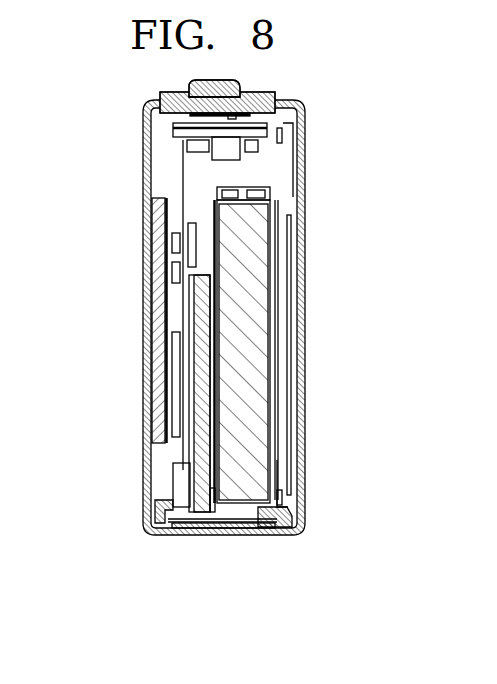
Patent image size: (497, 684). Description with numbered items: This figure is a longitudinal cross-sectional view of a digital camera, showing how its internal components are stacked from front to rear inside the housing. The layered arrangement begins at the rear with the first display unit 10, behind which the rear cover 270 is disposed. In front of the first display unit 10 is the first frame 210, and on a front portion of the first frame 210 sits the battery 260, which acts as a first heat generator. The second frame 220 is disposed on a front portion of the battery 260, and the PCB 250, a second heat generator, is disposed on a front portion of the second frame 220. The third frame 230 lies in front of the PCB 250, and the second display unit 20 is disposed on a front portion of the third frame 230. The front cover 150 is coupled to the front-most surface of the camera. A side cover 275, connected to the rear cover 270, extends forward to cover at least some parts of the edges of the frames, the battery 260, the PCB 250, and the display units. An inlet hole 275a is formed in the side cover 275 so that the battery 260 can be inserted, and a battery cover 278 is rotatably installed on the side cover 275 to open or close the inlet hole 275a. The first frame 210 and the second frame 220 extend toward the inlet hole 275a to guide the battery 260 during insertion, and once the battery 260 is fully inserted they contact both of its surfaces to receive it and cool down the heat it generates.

The first display unit 10 is at (304, 221).
The second display unit 20 is at (150, 274).
The front cover 150 is at (150, 480).
The first frame 210 is at (300, 270).
The second frame 220 is at (216, 514).
The third frame 230 is at (158, 333).
The PCB 250 is at (197, 482).
The battery 260 is at (258, 460).
The rear cover 270 is at (302, 496).
The side cover 275 is at (291, 534).
The inlet hole 275a is at (258, 536).
The battery cover 278 is at (193, 536).